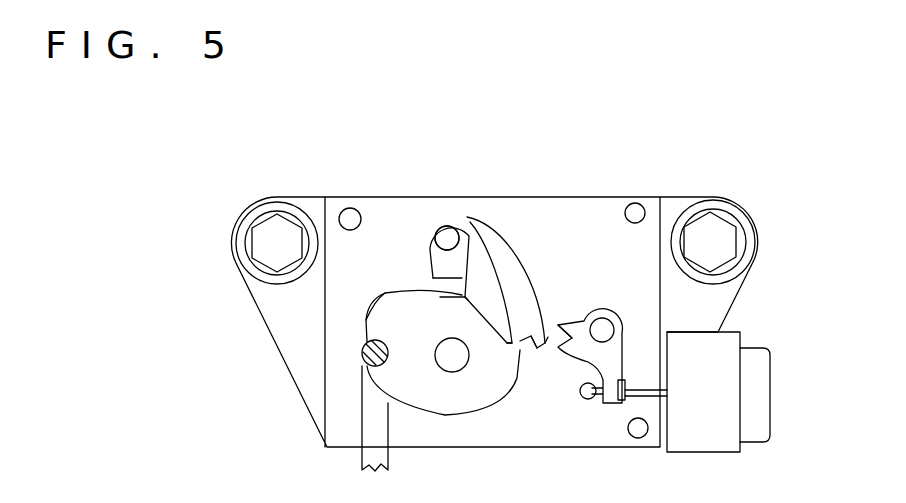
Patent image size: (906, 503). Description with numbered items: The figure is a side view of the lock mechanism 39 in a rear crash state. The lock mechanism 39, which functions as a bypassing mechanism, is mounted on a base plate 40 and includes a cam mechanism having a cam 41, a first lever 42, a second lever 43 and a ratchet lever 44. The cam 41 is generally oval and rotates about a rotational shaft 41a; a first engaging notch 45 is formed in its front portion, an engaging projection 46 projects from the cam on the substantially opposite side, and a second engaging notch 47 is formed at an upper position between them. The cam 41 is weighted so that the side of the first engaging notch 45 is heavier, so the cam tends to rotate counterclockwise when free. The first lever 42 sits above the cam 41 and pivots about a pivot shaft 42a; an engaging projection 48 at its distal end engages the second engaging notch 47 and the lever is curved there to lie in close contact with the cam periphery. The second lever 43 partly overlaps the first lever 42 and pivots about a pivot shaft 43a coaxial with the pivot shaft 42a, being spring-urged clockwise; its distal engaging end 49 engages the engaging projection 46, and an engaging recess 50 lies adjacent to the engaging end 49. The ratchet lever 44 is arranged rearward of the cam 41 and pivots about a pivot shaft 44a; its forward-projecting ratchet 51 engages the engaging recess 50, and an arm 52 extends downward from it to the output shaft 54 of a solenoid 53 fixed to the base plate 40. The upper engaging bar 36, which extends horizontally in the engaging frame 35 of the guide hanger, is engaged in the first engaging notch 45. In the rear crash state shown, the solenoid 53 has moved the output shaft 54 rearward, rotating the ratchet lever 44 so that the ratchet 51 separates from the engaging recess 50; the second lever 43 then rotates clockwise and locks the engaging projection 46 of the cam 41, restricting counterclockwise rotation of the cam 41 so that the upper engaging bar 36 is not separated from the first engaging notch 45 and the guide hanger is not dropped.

The engaging frame 35 is at (380, 455).
The upper engaging bar 36 is at (363, 350).
The lock mechanism 39 is at (248, 181).
The base plate 40 is at (592, 212).
The cam 41 is at (440, 341).
The rotational shaft 41a is at (447, 362).
The first lever 42 is at (484, 248).
The pivot shaft 42a is at (447, 226).
The second lever 43 is at (503, 278).
The pivot shaft 43a is at (447, 238).
The ratchet lever 44 is at (603, 360).
The pivot shaft 44a is at (602, 323).
The first engaging notch 45 is at (363, 326).
The engaging projection 46 is at (513, 350).
The second engaging notch 47 is at (470, 300).
The engaging projection 48 is at (450, 280).
The engaging end 49 is at (527, 343).
The engaging recess 50 is at (548, 337).
The ratchet 51 is at (560, 323).
The arm 52 is at (601, 403).
The solenoid 53 is at (683, 437).
The output shaft 54 is at (645, 392).